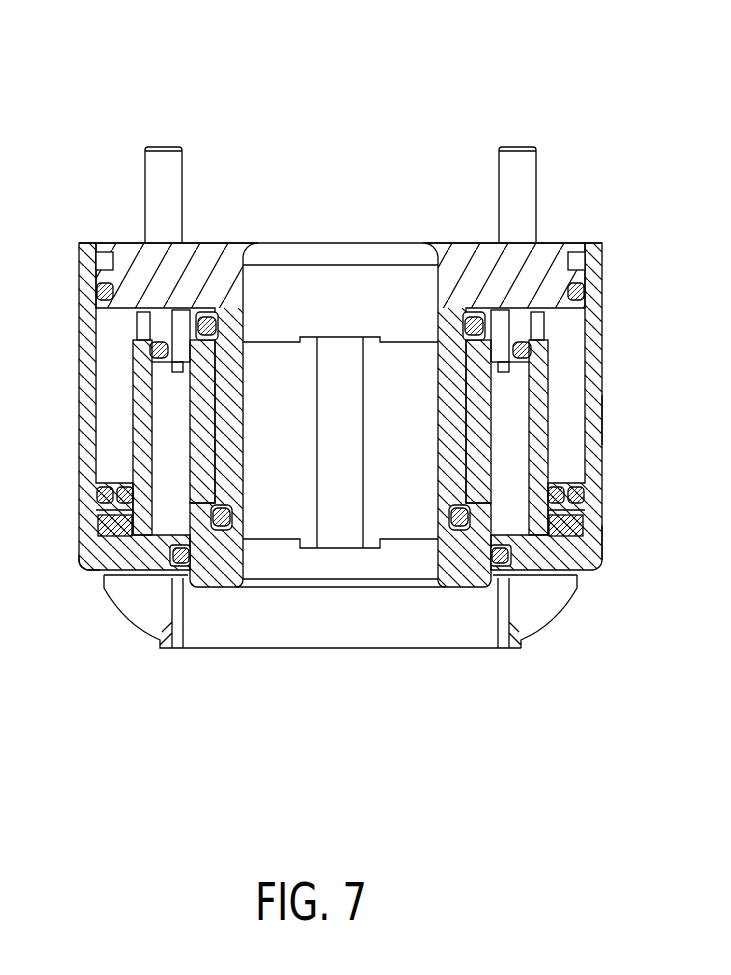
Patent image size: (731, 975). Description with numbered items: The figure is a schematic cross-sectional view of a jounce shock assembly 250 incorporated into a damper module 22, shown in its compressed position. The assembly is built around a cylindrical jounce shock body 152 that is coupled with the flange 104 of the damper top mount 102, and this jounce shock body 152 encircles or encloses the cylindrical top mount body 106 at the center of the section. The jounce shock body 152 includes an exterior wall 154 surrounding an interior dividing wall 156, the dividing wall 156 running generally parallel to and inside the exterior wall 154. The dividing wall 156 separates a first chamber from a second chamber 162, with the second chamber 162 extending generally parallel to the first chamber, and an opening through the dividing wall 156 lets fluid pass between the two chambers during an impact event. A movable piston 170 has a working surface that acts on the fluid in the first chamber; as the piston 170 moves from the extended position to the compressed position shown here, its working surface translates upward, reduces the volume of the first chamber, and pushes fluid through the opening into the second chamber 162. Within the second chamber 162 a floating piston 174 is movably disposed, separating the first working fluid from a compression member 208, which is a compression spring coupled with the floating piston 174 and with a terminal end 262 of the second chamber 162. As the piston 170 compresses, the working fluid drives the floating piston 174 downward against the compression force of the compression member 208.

The damper module 22 is at (199, 95).
The damper top mount 102 is at (239, 206).
The flange 104 is at (551, 258).
The top mount body 106 is at (383, 258).
The jounce shock body 152 is at (636, 550).
The exterior wall 154 is at (87, 372).
The dividing wall 156 is at (537, 398).
The second chamber 162 is at (105, 345).
The piston 170 is at (452, 575).
The floating piston 174 is at (105, 510).
The compression member 208 is at (566, 540).
The jounce shock assembly 250 is at (636, 418).
The terminal end 262 is at (95, 574).